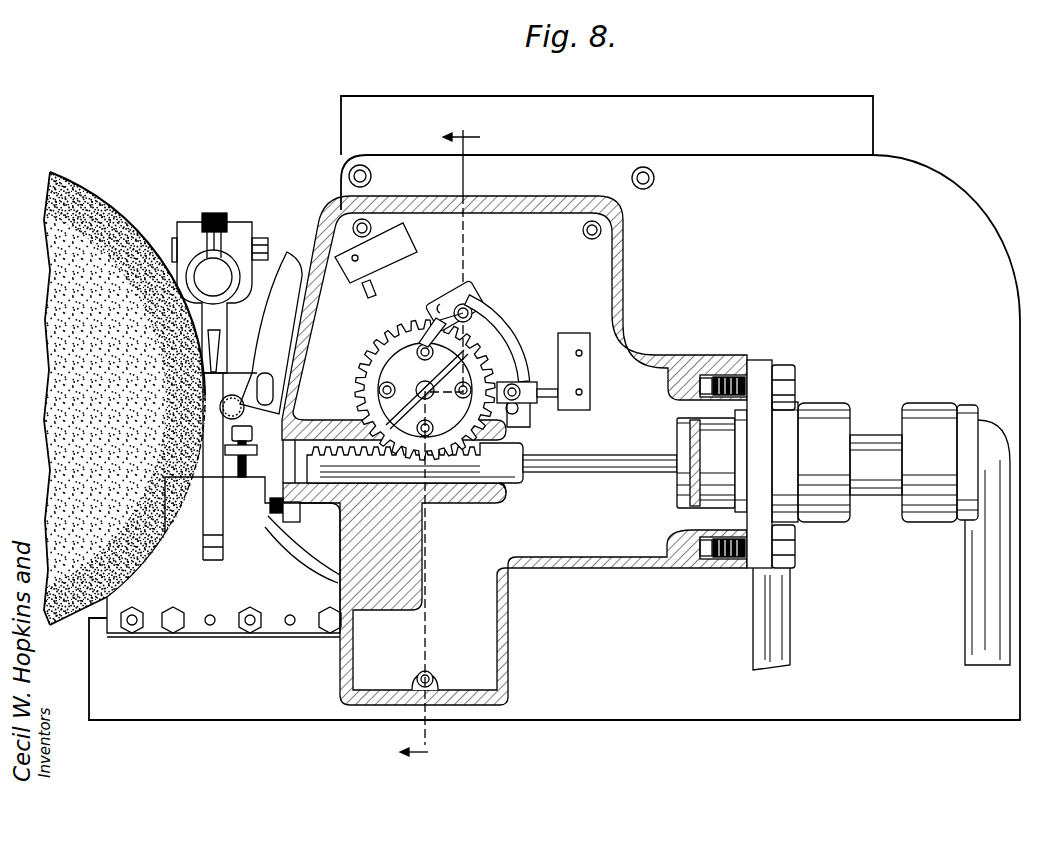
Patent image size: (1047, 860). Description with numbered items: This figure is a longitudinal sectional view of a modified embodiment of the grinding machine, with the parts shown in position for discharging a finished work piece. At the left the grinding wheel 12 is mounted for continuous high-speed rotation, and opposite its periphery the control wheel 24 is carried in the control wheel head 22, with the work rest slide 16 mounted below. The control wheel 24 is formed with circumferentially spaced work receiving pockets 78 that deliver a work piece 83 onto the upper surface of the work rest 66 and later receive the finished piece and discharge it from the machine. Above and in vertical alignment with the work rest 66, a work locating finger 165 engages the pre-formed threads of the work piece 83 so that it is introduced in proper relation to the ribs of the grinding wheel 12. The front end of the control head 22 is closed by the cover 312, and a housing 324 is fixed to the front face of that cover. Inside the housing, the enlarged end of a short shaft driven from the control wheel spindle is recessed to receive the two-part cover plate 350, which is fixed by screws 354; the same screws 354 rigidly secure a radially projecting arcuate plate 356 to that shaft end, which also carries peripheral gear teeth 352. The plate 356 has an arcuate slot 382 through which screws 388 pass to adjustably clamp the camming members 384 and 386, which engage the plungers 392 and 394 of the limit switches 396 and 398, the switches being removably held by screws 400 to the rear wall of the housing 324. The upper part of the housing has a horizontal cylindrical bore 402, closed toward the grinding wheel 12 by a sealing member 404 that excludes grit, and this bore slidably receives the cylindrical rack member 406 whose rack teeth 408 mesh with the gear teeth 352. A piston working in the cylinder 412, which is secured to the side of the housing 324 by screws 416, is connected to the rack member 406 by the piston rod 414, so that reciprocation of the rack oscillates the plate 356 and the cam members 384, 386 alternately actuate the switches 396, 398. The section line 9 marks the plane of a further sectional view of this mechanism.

The section line 9- 9 is at (440, 446).
The grinding wheel 12 is at (105, 400).
The work rest slide 16 is at (224, 557).
The control wheel head 22 is at (607, 125).
The control wheel 24 is at (290, 272).
The work rest 66 is at (205, 455).
The work receiving pockets 78 is at (265, 373).
The work piece 83 is at (220, 405).
The work locating finger 165 is at (210, 352).
The cover 312 is at (554, 437).
The housing 324 is at (625, 268).
The two-part cover plate 350 is at (429, 395).
The peripheral gear teeth 352 is at (388, 343).
The screws 354 is at (389, 386).
The arcuate shaped plate 356 is at (477, 316).
The arcuate slot 382 is at (488, 332).
The camming member 384 is at (470, 304).
The camming member 386 is at (530, 381).
The screws 388 is at (440, 308).
The plunger 392 is at (548, 393).
The plunger 394 is at (368, 290).
The limit switch 396 is at (590, 402).
The limit switch 398 is at (385, 262).
The screws 400 is at (579, 350).
The horizontal cylindrical bore 402 is at (465, 490).
The sealing member 404 is at (312, 428).
The cylindrical member 406 is at (512, 486).
The rack teeth 408 is at (468, 454).
The cylinder 412 is at (703, 467).
The piston rod 414 is at (598, 472).
The screws 416 is at (733, 362).